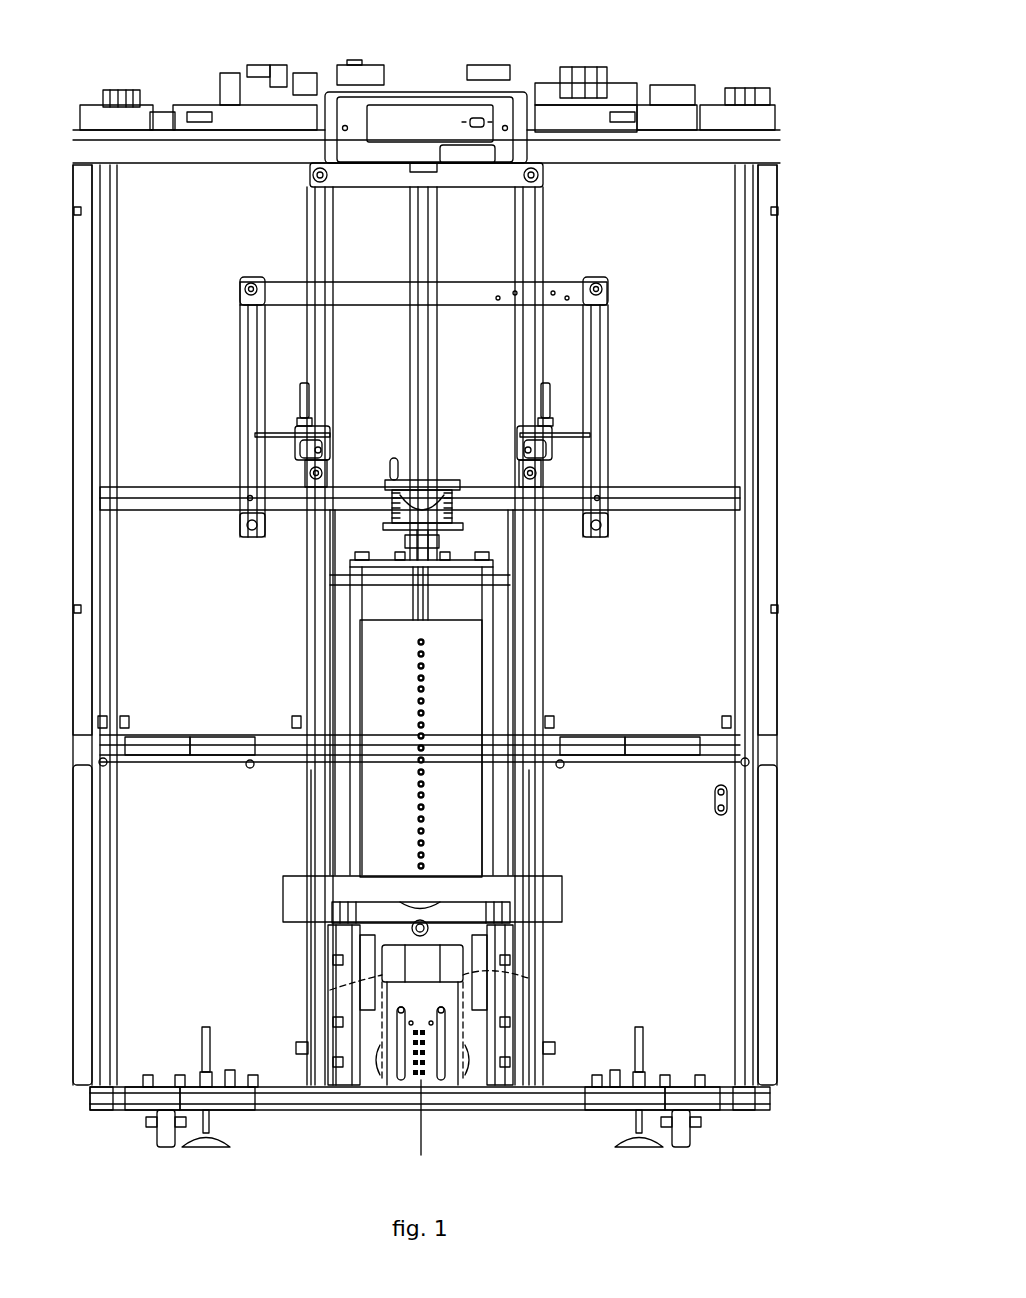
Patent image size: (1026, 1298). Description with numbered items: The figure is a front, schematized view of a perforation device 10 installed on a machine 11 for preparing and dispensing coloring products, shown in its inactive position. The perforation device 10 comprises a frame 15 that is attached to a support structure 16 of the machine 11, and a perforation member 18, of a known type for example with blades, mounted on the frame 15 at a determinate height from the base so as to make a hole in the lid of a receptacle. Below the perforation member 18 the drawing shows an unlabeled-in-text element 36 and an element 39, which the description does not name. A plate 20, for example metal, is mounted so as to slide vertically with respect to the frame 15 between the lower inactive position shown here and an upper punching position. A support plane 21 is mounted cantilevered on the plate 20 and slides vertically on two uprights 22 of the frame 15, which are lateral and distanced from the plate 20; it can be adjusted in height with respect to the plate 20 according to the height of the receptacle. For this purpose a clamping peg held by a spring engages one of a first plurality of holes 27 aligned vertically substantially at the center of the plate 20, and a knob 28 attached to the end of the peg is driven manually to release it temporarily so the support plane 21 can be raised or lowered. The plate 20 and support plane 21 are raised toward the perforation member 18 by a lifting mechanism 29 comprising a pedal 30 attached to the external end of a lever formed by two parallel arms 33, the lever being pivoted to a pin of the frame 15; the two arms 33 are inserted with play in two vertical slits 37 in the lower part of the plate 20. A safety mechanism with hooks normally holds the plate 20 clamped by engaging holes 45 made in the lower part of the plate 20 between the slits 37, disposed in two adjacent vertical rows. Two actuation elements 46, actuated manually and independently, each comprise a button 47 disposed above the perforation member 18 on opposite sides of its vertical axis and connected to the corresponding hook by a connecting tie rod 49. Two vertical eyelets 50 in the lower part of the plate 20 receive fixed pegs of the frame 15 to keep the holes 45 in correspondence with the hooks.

The perforation device 10 is at (633, 345).
The machine 11 is at (812, 95).
The frame 15 is at (300, 668).
The support structure 16 is at (762, 385).
The perforation member 18 is at (422, 517).
The plate 20 is at (458, 688).
The support plane 21 is at (540, 907).
The uprights 22 is at (320, 814).
The holes 27 is at (426, 662).
The knob 28 is at (418, 905).
The lifting mechanism 29 is at (300, 962).
The pedal 30 is at (433, 965).
The arms 33 is at (315, 994).
The shaft 36 is at (425, 594).
The vertical slits 37 is at (370, 1085).
The tray 39 is at (480, 552).
The holes 45 is at (410, 1068).
The actuation elements 46 is at (298, 392).
The button 47 is at (275, 447).
The connecting tie rod 49 is at (383, 490).
The vertical eyelets 50 is at (410, 1050).